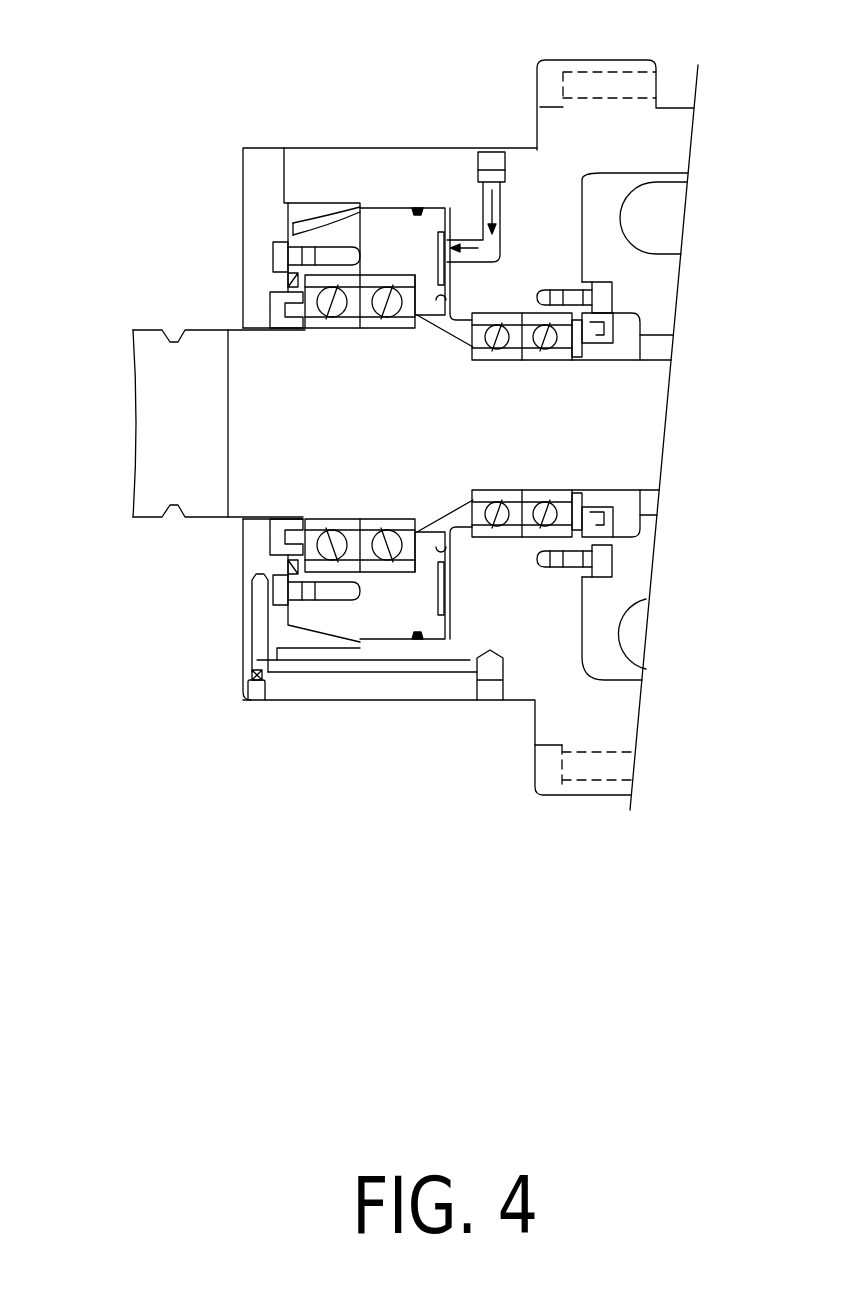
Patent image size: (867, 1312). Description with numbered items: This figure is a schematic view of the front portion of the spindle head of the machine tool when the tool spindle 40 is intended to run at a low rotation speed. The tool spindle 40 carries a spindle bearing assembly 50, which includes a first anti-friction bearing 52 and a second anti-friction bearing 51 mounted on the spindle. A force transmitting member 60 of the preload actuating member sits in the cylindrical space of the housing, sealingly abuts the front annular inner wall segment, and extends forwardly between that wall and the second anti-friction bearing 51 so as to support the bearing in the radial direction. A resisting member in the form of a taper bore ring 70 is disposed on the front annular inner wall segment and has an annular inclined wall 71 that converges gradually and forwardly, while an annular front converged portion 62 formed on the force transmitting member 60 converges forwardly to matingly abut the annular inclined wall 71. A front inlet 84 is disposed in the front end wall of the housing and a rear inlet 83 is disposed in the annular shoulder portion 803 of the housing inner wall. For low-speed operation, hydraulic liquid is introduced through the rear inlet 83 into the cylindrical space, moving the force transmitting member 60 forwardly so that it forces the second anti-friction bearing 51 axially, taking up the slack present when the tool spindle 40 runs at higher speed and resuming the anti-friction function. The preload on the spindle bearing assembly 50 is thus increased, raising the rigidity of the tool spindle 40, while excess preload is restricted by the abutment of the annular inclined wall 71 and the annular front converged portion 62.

The tool spindle 40 is at (652, 398).
The spindle bearing assembly 50 is at (484, 555).
The second anti-friction bearing 51 is at (377, 273).
The first anti-friction bearing 52 is at (513, 537).
The force transmitting member 60 is at (400, 185).
The annular front converged portion 62 is at (288, 236).
The taper bore ring 70 is at (302, 195).
The annular inclined wall 71 is at (348, 217).
The rear inlet 83 is at (497, 200).
The annular shoulder portion 803 is at (450, 285).
The front inlet 84 is at (258, 637).